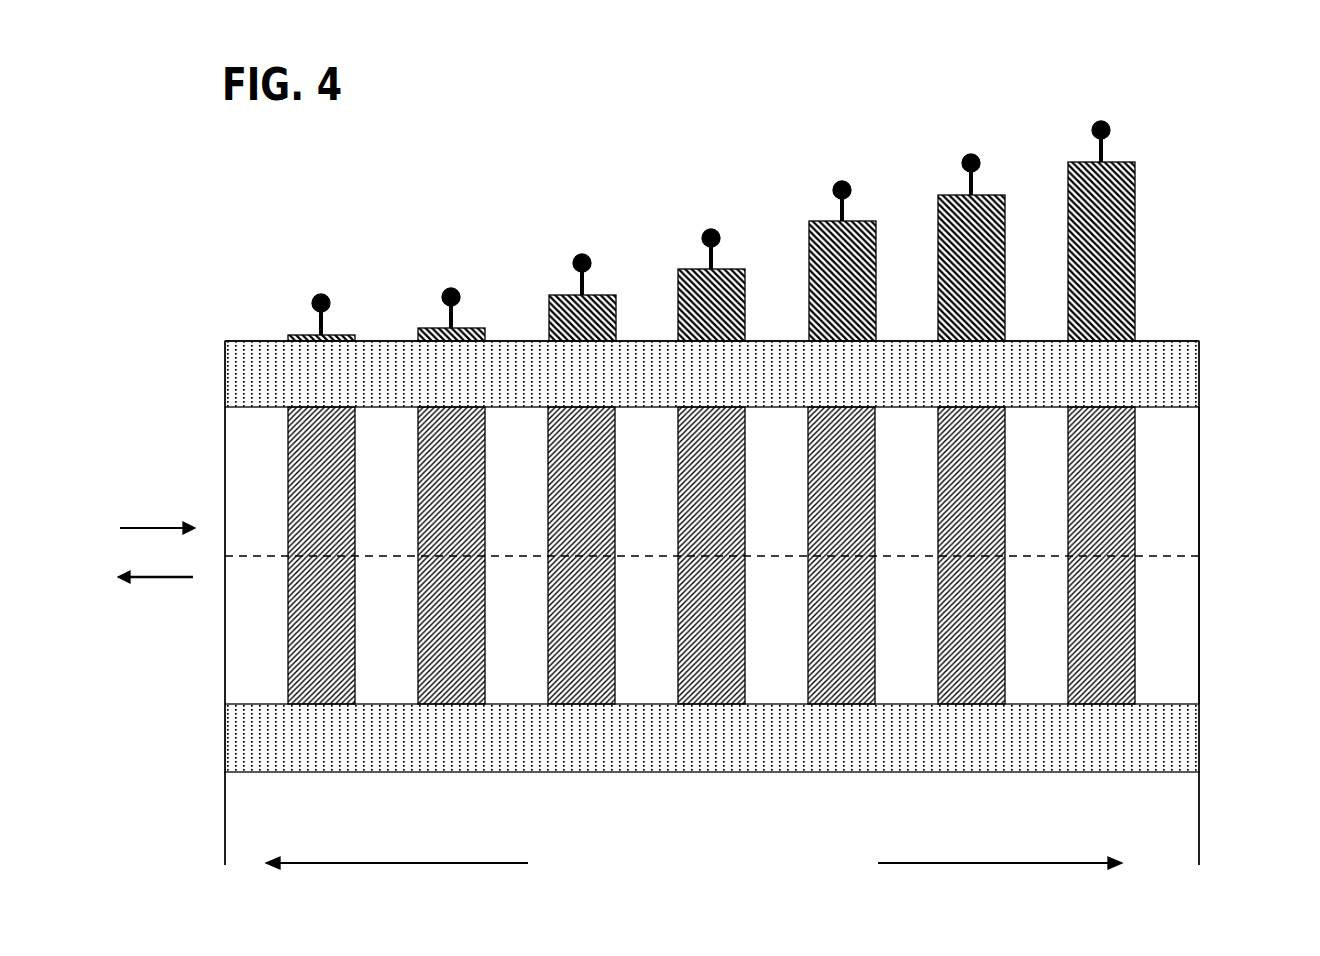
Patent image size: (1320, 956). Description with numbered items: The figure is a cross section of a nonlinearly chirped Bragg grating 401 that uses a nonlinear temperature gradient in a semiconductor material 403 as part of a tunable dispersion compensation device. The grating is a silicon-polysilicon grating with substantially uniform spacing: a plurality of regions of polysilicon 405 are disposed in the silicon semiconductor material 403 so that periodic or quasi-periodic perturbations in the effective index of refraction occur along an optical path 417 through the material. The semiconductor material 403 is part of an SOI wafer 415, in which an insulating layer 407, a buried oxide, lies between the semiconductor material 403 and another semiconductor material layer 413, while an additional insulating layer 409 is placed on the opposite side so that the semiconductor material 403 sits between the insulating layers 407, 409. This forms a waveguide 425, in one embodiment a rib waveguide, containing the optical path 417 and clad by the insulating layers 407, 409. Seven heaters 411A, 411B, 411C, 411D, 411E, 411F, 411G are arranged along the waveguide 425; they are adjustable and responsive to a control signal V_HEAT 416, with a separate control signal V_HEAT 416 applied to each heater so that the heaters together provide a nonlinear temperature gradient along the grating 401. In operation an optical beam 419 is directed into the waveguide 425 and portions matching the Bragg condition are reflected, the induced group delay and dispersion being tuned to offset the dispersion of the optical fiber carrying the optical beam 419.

The nonlinearly chirped Bragg grating 401 is at (1229, 190).
The semiconductor material 403 is at (228, 446).
The regions of polysilicon 405 is at (307, 705).
The insulating layer 407 is at (1191, 723).
The additional insulating layer 409 is at (1201, 359).
The heater 411A is at (286, 333).
The heater 411B is at (417, 327).
The heater 411C is at (548, 295).
The heater 411D is at (677, 269).
The heater 411E is at (808, 221).
The heater 411F is at (937, 195).
The heater 411G is at (1067, 162).
The semiconductor material layer 413 is at (1191, 820).
The SOI wafer 415 is at (1212, 328).
The control signal V_HEAT 416 is at (1136, 72).
The optical path 417 is at (1189, 554).
The optical beam 419 is at (150, 525).
The waveguide 425 is at (1216, 432).